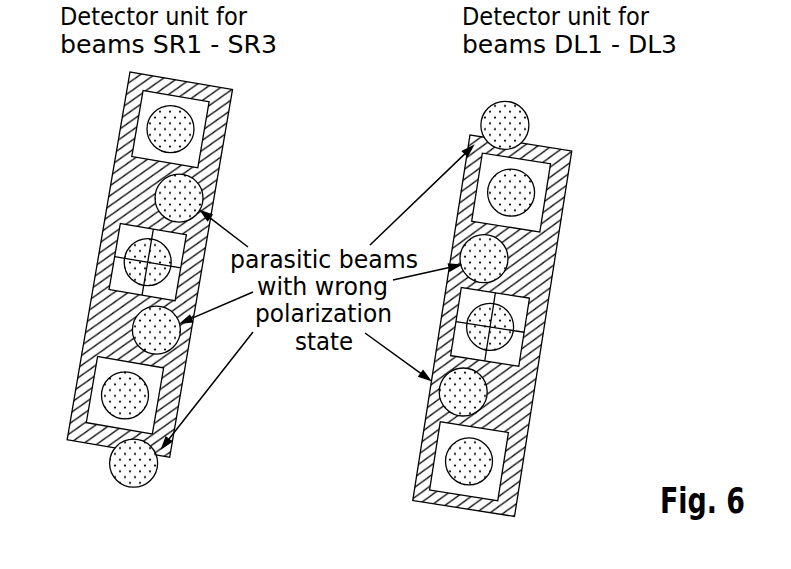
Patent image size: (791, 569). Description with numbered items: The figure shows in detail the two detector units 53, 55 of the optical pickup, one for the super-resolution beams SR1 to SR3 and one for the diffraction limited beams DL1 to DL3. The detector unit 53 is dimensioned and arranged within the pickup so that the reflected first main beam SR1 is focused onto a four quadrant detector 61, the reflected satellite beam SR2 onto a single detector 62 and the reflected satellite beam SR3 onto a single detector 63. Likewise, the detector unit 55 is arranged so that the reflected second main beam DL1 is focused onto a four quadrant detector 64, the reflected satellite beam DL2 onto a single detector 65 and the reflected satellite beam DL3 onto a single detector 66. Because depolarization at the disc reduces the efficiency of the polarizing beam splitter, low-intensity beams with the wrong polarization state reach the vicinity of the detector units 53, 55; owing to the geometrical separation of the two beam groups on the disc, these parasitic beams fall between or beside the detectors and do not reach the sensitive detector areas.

The detector unit 53 is at (87, 443).
The detector unit 55 is at (413, 501).
The four quadrant detector 61 is at (105, 272).
The single detector 62 is at (142, 148).
The single detector 63 is at (97, 421).
The four quadrant detector 64 is at (522, 310).
The single detector 65 is at (543, 177).
The single detector 66 is at (495, 448).